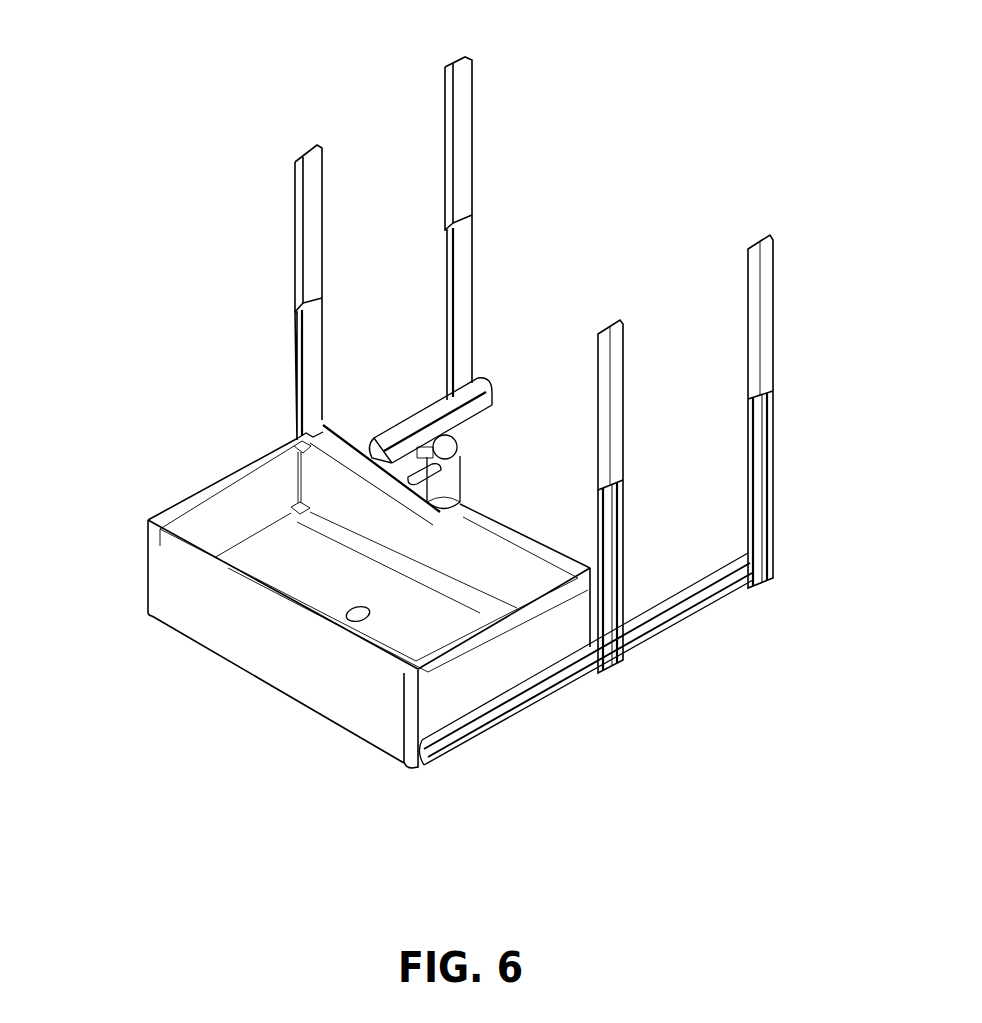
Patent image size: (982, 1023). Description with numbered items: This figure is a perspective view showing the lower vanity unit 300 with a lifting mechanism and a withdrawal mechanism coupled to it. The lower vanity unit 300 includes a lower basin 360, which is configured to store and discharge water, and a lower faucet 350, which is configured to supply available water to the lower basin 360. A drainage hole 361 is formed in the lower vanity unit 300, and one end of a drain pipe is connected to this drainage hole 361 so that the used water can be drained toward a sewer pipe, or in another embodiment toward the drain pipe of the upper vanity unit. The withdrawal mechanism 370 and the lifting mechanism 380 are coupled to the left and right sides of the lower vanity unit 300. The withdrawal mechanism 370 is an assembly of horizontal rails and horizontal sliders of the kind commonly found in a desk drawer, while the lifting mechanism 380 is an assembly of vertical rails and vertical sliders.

The lower vanity unit 300 is at (128, 562).
The lower faucet 350 is at (455, 478).
The lower basin 360 is at (210, 535).
The drainage hole 361 is at (347, 610).
The withdrawal mechanism 370 is at (506, 699).
The lifting mechanism 380 is at (759, 428).